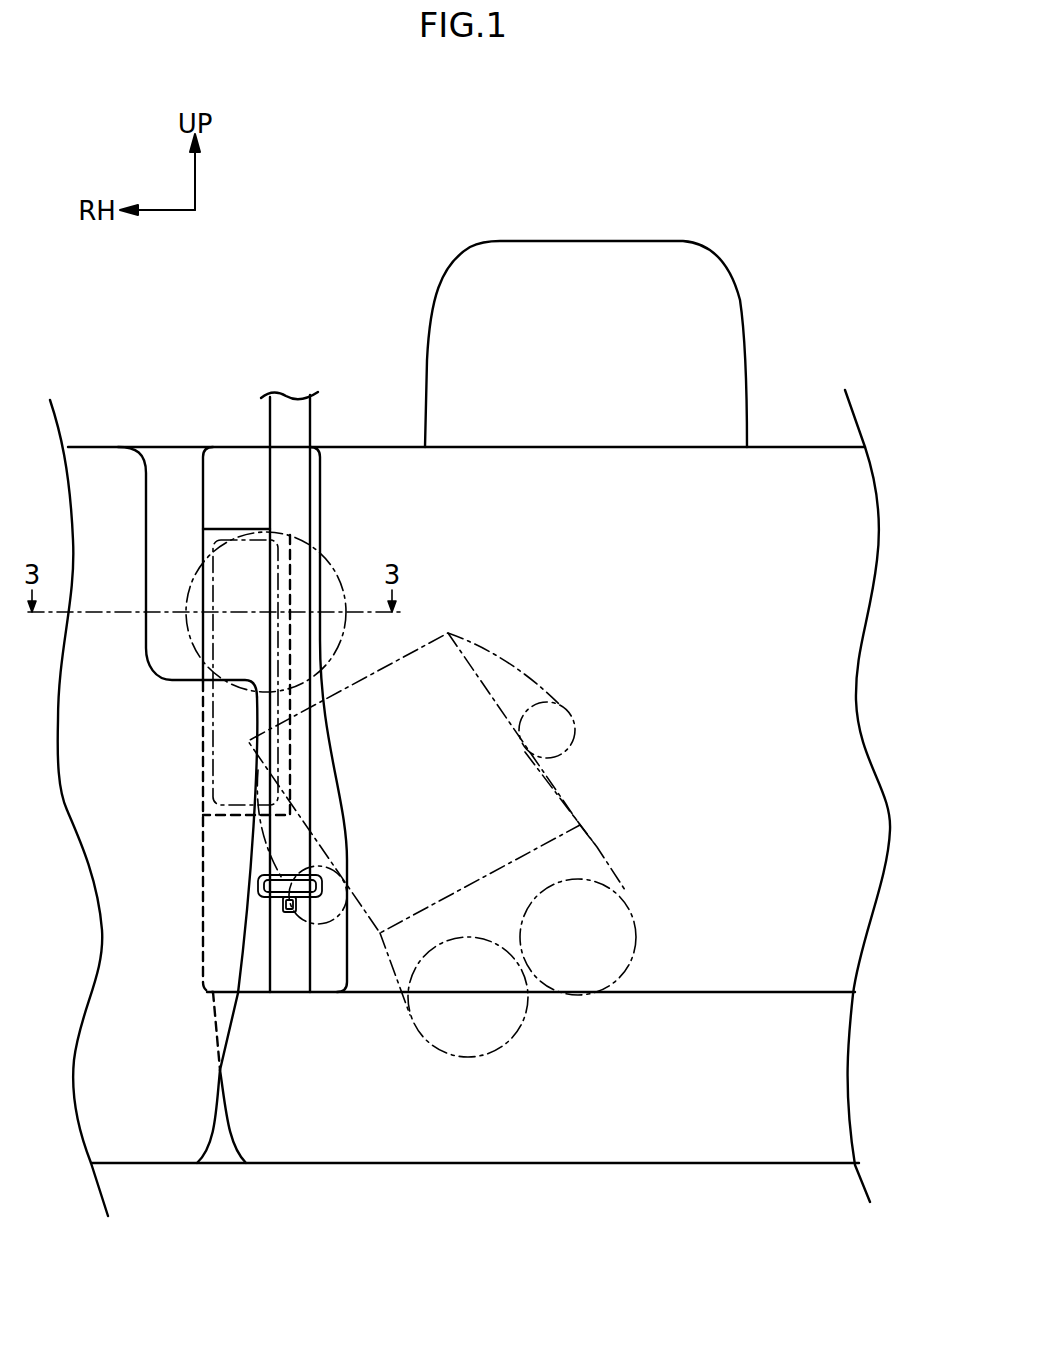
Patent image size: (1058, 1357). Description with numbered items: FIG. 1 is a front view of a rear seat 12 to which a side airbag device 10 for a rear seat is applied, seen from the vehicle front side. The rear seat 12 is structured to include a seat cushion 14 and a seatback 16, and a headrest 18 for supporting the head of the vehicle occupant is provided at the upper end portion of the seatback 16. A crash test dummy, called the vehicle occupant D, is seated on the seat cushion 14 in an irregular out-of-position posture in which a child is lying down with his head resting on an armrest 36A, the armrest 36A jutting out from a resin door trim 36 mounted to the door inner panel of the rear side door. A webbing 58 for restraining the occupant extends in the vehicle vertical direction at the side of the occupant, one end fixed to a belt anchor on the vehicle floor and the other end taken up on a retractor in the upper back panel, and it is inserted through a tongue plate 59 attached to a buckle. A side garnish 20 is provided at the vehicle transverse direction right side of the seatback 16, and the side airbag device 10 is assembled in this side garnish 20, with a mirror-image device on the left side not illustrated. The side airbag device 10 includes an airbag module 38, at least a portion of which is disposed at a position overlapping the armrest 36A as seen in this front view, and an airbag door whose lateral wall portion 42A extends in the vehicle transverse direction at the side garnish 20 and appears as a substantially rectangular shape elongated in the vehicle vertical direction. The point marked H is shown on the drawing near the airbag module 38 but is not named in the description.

The side airbag device for a rear seat 10 is at (244, 529).
The rear seat 12 is at (822, 447).
The seat cushion 14 is at (742, 1168).
The seatback 16 is at (845, 711).
The headrest 18 is at (717, 250).
The side garnish 20 is at (203, 492).
The door trim 36 is at (103, 447).
The armrest 36A is at (182, 680).
The airbag module 38 is at (213, 604).
The lateral wall portion 42A is at (255, 530).
The webbing 58 is at (318, 420).
The tongue plate 59 is at (322, 887).
The hip point H is at (330, 578).
The vehicle occupant D is at (432, 639).